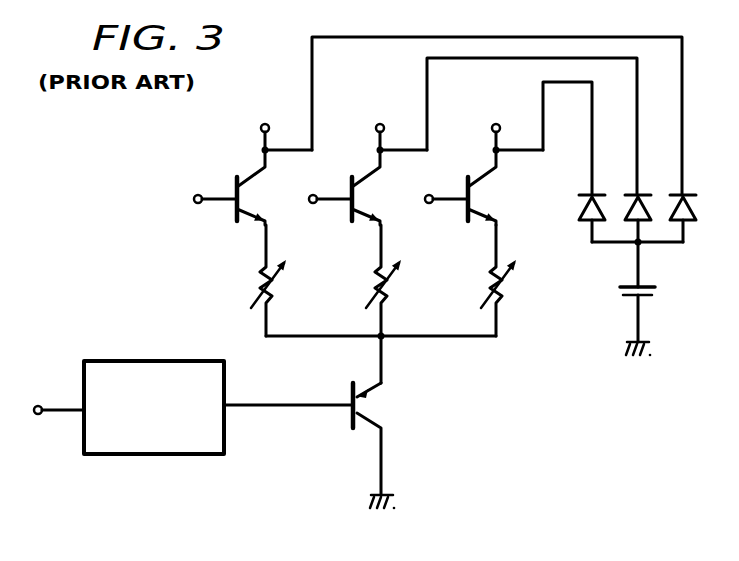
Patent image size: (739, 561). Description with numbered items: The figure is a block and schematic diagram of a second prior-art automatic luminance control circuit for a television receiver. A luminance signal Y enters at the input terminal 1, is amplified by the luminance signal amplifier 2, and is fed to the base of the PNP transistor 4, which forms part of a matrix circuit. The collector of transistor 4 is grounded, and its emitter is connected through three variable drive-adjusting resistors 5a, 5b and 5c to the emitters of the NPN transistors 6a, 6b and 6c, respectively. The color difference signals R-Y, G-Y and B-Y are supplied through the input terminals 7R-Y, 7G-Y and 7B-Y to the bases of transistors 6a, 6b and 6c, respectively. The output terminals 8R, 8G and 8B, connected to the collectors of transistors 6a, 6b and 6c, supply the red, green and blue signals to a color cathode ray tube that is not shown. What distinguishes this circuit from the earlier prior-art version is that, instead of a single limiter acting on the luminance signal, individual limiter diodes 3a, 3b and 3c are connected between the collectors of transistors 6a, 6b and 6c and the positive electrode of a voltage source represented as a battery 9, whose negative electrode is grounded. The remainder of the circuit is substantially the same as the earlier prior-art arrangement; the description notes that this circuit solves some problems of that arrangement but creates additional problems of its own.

The input terminal 1 is at (38, 414).
The luminance signal amplifier 2 is at (205, 456).
The limiter diode 3a is at (578, 203).
The limiter diode 3b is at (624, 203).
The limiter diode 3c is at (669, 203).
The PNP transistor 4 is at (351, 425).
The variable drive-adjusting resistor 5a is at (255, 293).
The variable drive-adjusting resistor 5b is at (372, 293).
The variable drive-adjusting resistor 5c is at (488, 293).
The NPN transistor 6a is at (233, 216).
The NPN transistor 6b is at (348, 216).
The NPN transistor 6c is at (470, 216).
The input terminal 7R-Y is at (199, 195).
The input terminal 7G-Y is at (314, 195).
The input terminal 7B-Y is at (430, 195).
The output terminal 8R is at (265, 124).
The output terminal 8G is at (380, 124).
The output terminal 8B is at (496, 124).
The battery 9 is at (632, 297).